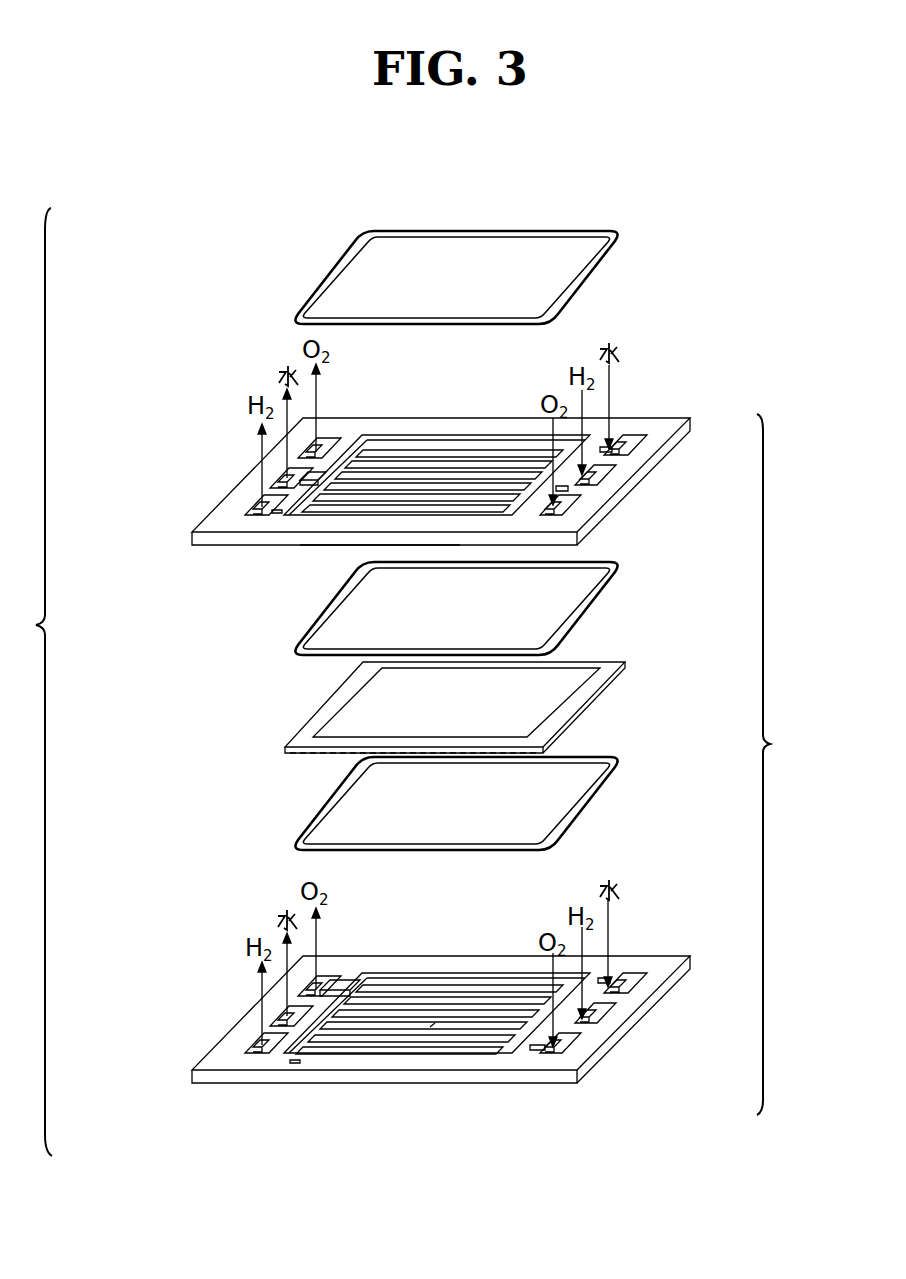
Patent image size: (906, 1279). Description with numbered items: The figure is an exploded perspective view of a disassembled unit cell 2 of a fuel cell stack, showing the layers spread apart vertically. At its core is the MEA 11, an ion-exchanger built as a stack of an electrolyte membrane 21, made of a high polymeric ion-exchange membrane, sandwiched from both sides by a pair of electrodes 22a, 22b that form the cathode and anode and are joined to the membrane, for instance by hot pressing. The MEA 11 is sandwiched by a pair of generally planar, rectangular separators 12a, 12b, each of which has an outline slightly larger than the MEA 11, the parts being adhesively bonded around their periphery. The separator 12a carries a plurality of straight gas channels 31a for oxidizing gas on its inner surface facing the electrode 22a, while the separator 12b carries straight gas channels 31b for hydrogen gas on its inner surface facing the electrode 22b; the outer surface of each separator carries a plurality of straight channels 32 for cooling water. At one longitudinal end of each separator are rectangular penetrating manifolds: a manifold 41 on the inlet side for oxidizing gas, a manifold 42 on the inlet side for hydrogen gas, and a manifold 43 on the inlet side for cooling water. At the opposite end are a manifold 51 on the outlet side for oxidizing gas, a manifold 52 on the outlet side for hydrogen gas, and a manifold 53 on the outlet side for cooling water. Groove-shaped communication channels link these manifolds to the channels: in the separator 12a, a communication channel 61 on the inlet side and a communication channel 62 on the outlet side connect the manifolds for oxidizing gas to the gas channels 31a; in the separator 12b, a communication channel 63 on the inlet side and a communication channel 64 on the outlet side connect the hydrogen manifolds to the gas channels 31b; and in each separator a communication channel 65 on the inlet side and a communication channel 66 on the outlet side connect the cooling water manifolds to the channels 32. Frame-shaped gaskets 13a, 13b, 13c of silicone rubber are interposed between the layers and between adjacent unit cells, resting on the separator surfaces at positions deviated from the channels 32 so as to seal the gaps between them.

The unit cell 2 is at (774, 764).
The MEA 11 is at (392, 718).
The separator 12a is at (193, 1080).
The separator 12b is at (193, 540).
The gasket 13a is at (297, 832).
The gasket 13b is at (297, 632).
The gasket 13c is at (320, 278).
The electrolyte membrane 21 is at (293, 730).
The electrode 22a is at (313, 757).
The electrode 22b is at (333, 710).
The gas channel for oxidizing gas 31a is at (430, 1027).
The gas channel for hydrogen gas 31b is at (300, 546).
The channel for cooling water 32 is at (463, 455).
The manifold of inlet side for oxidizing gas 41 is at (310, 458).
The manifold of inlet side for hydrogen gas 42 is at (258, 513).
The manifold of inlet side for cooling water 43 is at (277, 483).
The manifold of outlet side for oxidizing gas 51 is at (560, 515).
The manifold of outlet side for hydrogen gas 52 is at (597, 483).
The manifold of outlet side for cooling water 53 is at (627, 453).
The communication channel of inlet side 61 is at (335, 982).
The communication channel of outlet side 62 is at (537, 1046).
The communication channel of inlet side 63 is at (277, 507).
The communication channel of outlet side 64 is at (563, 490).
The communication channel of inlet side 65 is at (328, 474).
The communication channel of outlet side 66 is at (608, 447).